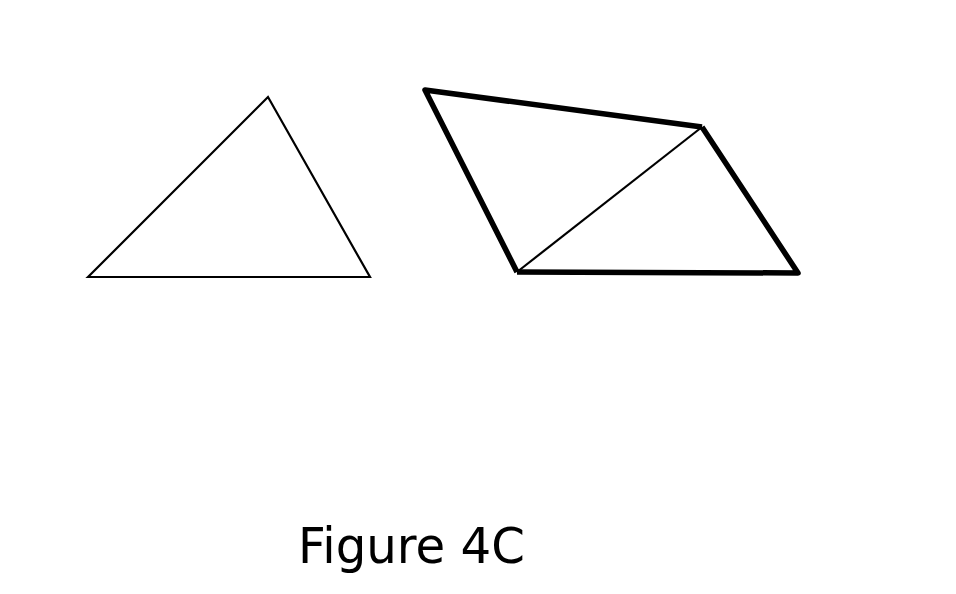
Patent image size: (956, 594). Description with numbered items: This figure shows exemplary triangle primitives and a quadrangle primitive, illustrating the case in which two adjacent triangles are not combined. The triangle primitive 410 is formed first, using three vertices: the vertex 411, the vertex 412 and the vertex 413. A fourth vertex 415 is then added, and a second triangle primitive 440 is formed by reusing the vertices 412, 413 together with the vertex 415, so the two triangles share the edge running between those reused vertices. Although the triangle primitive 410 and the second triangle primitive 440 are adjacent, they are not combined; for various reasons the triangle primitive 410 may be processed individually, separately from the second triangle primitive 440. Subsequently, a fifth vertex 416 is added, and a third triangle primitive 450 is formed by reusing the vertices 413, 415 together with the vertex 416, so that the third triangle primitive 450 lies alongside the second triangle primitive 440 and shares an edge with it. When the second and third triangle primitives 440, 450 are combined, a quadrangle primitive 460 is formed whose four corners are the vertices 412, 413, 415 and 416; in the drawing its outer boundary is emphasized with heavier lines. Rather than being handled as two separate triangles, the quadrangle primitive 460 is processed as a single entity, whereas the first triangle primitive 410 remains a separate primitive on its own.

The triangle primitive 410 is at (257, 236).
The vertex 411 is at (88, 277).
The vertex 412 is at (423, 92).
The vertex 413 is at (517, 272).
The fourth vertex 415 is at (702, 127).
The fifth vertex 416 is at (799, 271).
The second triangle primitive 440 is at (592, 178).
The third triangle primitive 450 is at (707, 236).
The quadrangle primitive 460 is at (747, 276).